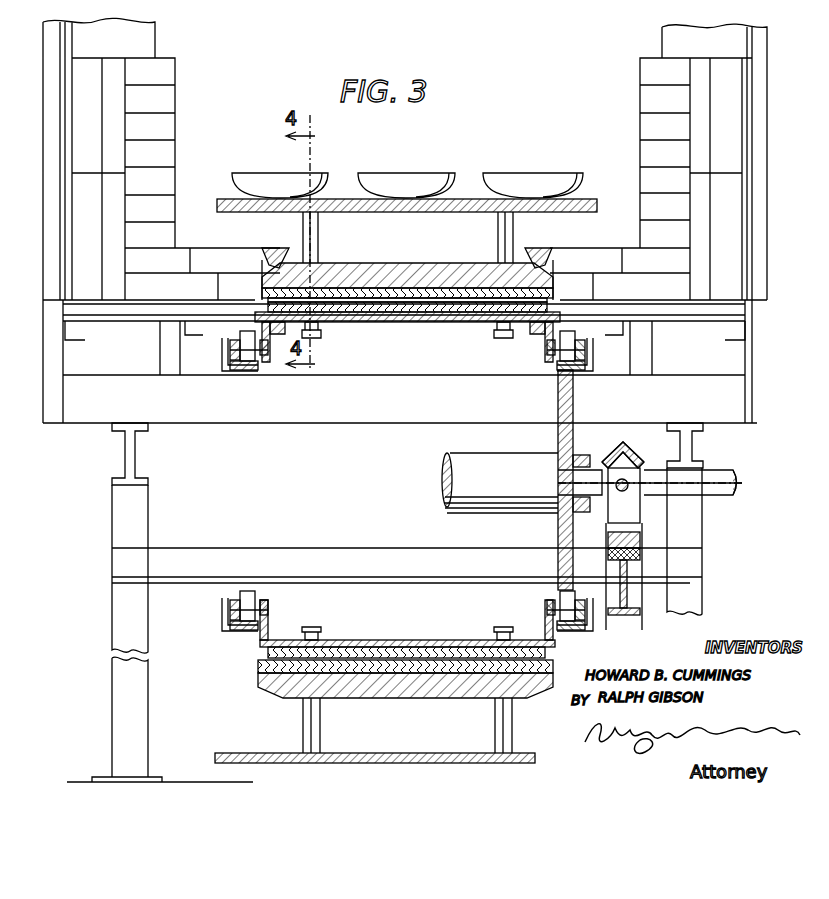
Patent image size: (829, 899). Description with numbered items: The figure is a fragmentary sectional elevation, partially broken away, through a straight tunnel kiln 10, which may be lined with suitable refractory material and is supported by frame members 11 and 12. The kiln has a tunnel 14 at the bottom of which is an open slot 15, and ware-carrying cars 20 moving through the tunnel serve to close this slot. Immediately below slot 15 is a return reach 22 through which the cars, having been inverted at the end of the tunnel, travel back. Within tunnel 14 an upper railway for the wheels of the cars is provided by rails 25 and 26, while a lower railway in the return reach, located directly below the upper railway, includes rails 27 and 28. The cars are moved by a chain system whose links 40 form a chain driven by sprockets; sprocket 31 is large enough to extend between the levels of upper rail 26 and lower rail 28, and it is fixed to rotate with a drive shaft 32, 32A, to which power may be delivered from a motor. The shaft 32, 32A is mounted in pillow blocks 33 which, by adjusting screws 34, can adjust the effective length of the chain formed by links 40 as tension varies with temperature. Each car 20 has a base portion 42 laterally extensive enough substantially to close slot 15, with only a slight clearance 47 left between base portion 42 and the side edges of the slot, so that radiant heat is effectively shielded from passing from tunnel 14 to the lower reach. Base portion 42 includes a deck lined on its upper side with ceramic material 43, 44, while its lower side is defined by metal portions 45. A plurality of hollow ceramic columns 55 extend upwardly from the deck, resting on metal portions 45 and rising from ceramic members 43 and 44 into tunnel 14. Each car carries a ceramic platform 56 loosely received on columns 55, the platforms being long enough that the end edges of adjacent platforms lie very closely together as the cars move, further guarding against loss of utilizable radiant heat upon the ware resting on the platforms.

The straight tunnel kiln 10 is at (757, 71).
The frame member 11 is at (125, 448).
The frame member 12 is at (123, 510).
The tunnel 14 is at (407, 160).
The open slot 15 is at (283, 250).
The car 20 is at (406, 242).
The return reach 22 is at (440, 622).
The rail 25 is at (233, 372).
The rail 26 is at (585, 365).
The rail 27 is at (230, 633).
The rail 28 is at (575, 633).
The sprocket 31 is at (558, 437).
The drive shaft 32 is at (745, 462).
The drive shaft 32A is at (447, 455).
The pillow block 33 is at (631, 447).
The screw 34 is at (628, 490).
The link 40 is at (401, 495).
The base portion 42 is at (394, 334).
The ceramic material 43 is at (355, 268).
The ceramic material 44 is at (406, 274).
The metal portion 45 is at (412, 332).
The clearance 47 is at (275, 262).
The hollow ceramic column 55 is at (311, 230).
The ceramic platform 56 is at (217, 199).